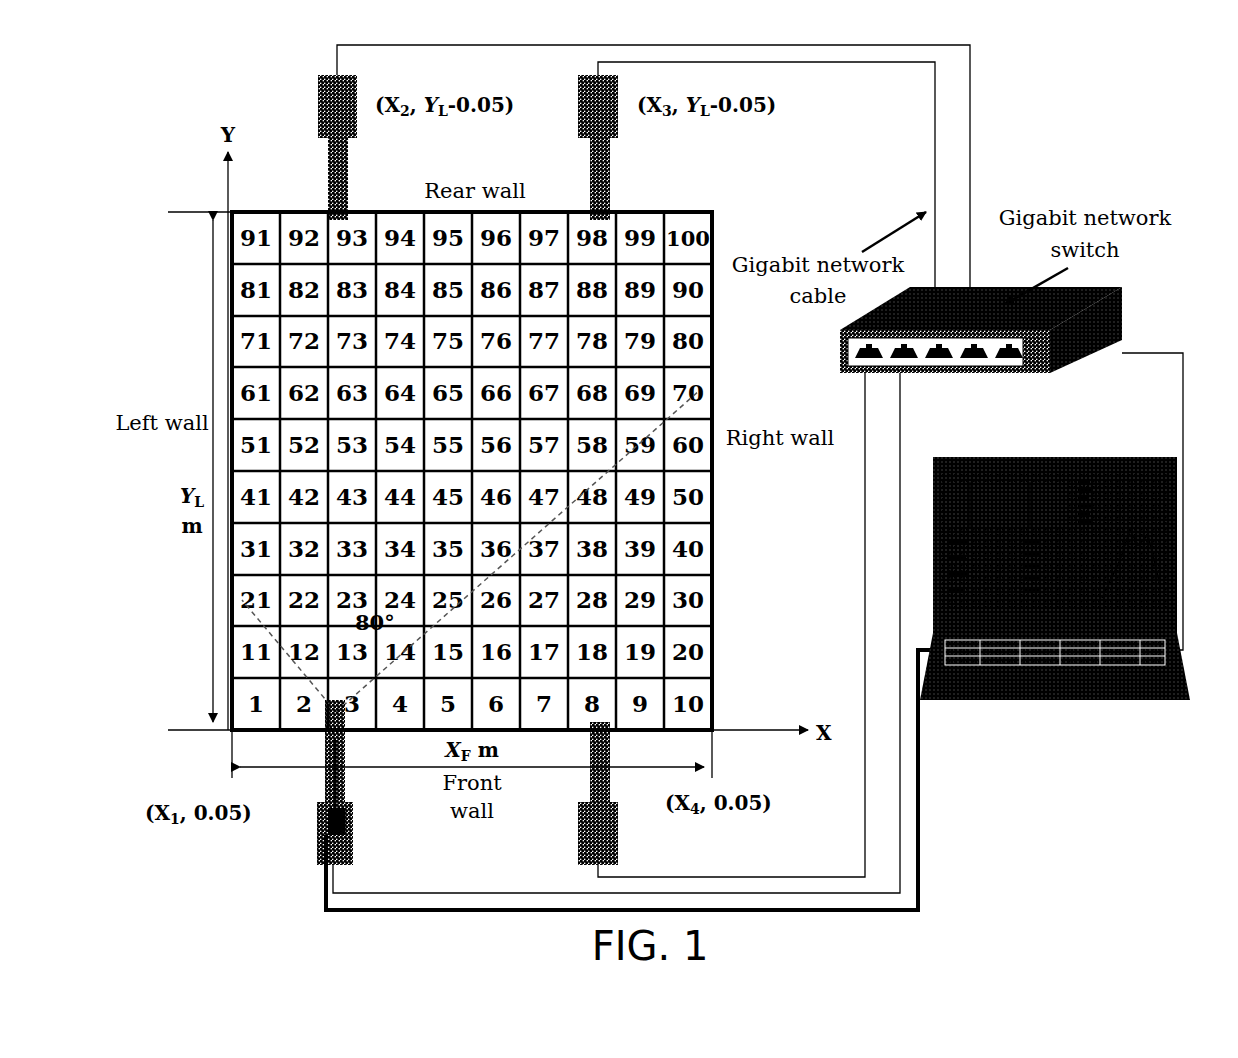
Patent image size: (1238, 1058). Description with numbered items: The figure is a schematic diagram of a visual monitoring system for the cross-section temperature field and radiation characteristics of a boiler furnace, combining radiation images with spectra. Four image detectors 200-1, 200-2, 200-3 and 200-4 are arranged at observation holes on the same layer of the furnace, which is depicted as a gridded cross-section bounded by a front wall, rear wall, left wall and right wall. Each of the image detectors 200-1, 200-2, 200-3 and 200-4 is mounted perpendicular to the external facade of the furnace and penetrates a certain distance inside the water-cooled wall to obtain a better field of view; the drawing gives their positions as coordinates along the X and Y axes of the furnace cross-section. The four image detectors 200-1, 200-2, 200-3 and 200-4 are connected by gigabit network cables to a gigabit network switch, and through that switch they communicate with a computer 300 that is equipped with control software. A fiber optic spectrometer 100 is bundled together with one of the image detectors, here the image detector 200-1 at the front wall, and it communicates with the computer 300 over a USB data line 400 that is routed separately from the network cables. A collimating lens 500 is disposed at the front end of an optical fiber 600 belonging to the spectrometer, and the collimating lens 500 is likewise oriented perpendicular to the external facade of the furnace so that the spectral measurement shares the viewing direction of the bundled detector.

The fiber optic spectrometer 100 is at (349, 821).
The image detector 200-1 is at (318, 825).
The image detector 200-2 is at (357, 122).
The image detector 200-3 is at (618, 122).
The image detector 200-4 is at (618, 822).
The computer 300 is at (1178, 700).
The USB data line 400 is at (926, 816).
The collimating lens 500 is at (325, 792).
The optical fiber 600 is at (217, 751).